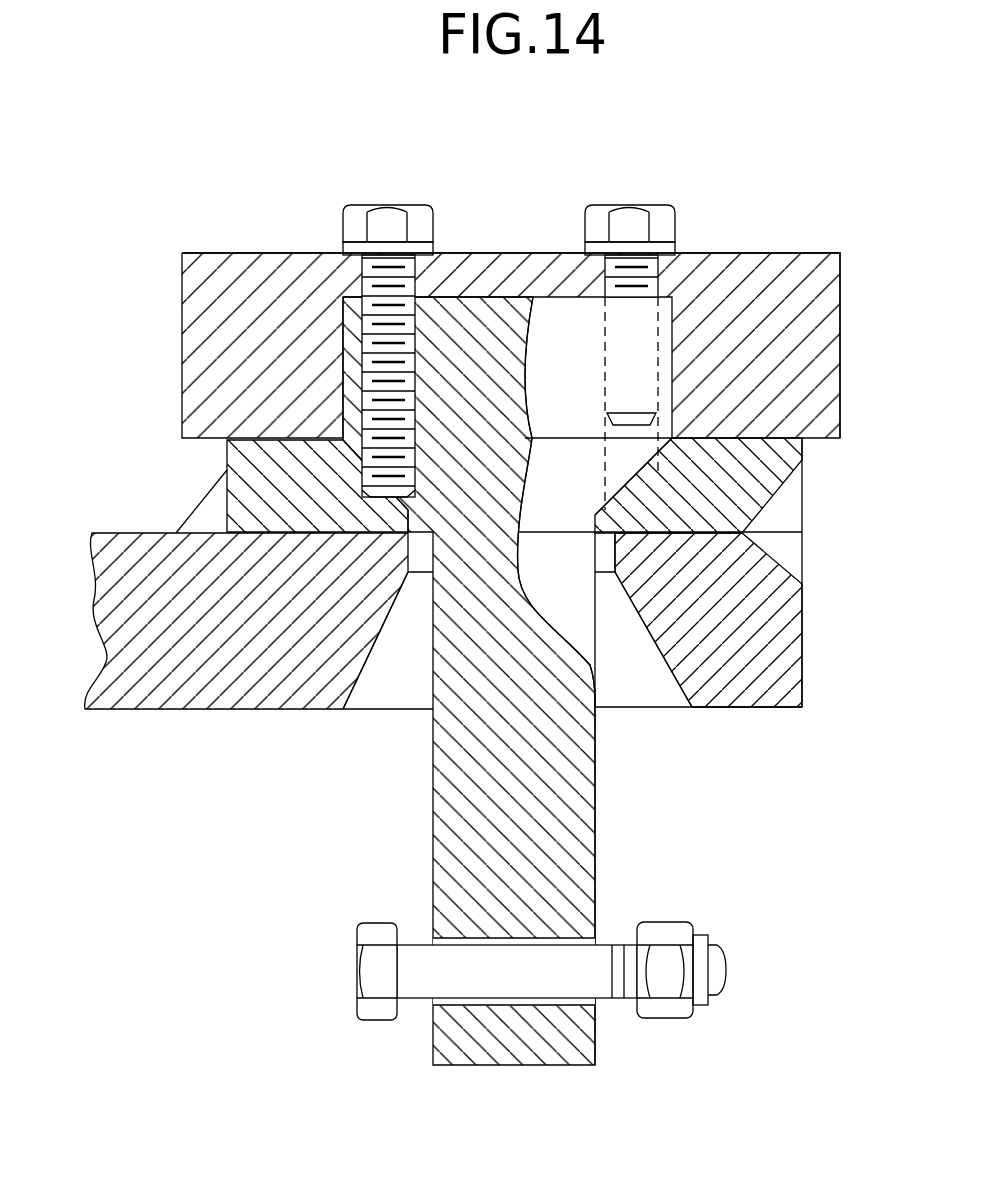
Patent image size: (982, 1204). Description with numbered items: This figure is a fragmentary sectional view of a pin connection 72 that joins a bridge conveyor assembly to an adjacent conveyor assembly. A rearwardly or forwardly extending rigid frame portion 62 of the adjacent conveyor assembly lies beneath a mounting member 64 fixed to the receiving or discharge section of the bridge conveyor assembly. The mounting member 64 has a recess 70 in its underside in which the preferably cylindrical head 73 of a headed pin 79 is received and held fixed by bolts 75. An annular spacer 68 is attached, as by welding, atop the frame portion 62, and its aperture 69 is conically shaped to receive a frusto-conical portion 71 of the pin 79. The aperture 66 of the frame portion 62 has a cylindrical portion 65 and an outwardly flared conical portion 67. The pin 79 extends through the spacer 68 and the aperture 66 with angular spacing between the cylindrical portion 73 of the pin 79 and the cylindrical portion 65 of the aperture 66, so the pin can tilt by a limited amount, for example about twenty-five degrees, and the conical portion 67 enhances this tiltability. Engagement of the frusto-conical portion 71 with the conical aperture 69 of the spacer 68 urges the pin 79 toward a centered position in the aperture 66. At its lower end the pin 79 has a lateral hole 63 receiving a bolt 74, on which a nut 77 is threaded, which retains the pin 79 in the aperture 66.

The rigid frame portion 62 is at (105, 667).
The lateral hole 63 is at (430, 1011).
The mounting member 64 is at (820, 252).
The cylindrical portion 65 is at (609, 571).
The aperture 66 is at (403, 722).
The conical portion 67 is at (357, 692).
The annular spacer 68 is at (802, 452).
The aperture 69 is at (603, 518).
The recess 70 is at (672, 378).
The frusto-conical portion 71 is at (612, 488).
The pin connection 72 is at (152, 338).
The cylindrical head 73 is at (676, 303).
The bolt 74 is at (357, 998).
The bolts 75 is at (352, 205).
The nut 77 is at (668, 1020).
The headed pin 79 is at (608, 882).